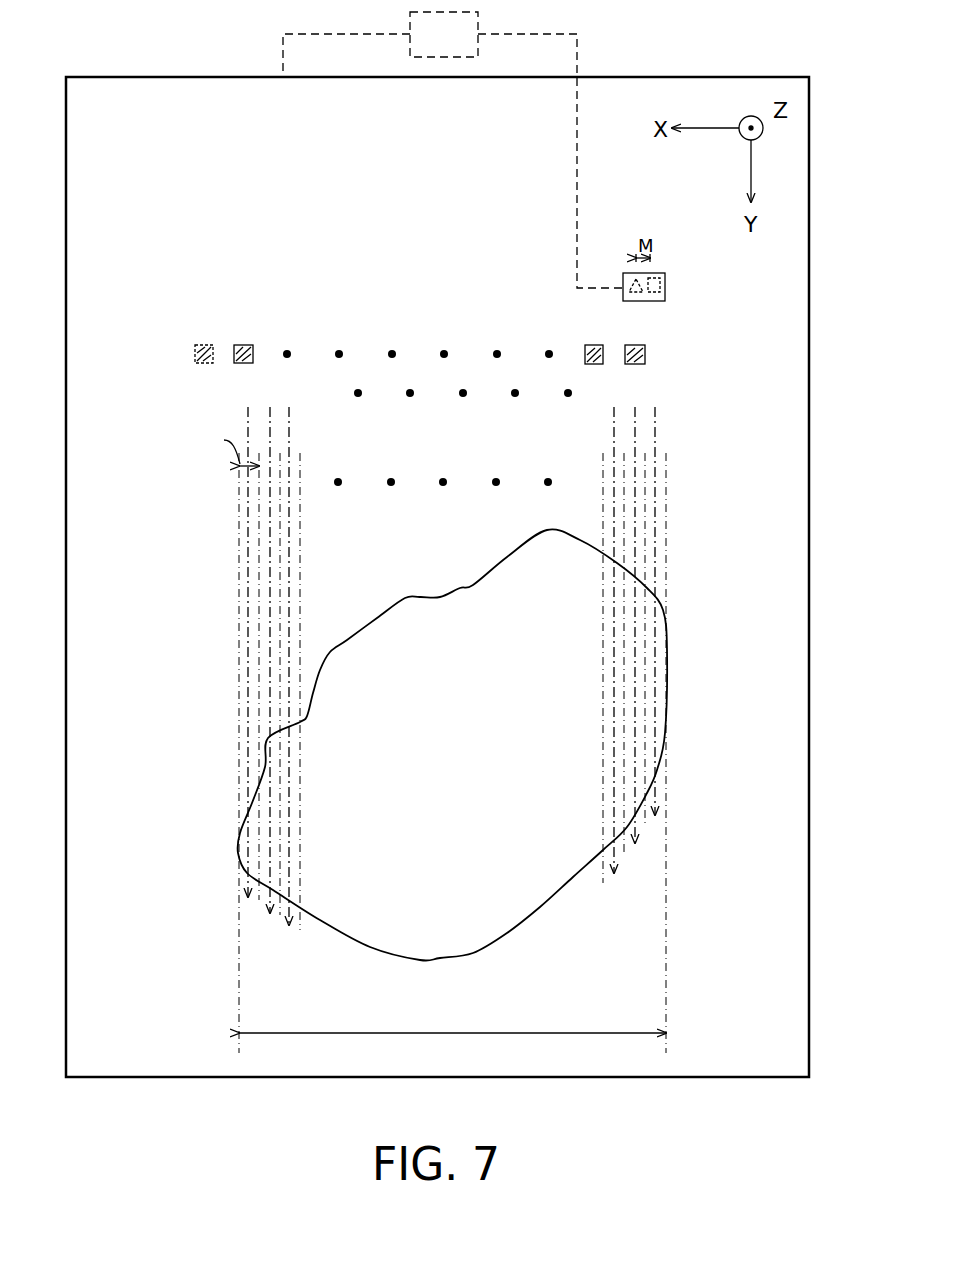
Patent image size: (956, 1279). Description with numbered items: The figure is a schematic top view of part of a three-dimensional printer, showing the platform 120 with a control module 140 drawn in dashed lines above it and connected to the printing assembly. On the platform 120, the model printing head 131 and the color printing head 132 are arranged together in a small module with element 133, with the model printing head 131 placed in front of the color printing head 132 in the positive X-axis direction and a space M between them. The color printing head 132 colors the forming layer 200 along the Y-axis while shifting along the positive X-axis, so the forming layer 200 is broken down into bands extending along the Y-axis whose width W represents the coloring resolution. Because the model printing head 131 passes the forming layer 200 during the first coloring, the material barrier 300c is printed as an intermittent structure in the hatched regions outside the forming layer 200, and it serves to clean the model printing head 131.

The platform 120 is at (192, 77).
The control module 140 is at (467, 47).
The model printing head 131 is at (630, 288).
The color printing head 132 is at (665, 290).
The image capturing element 133 is at (655, 278).
The forming layer 200 is at (686, 684).
The material barrier 300c is at (188, 284).